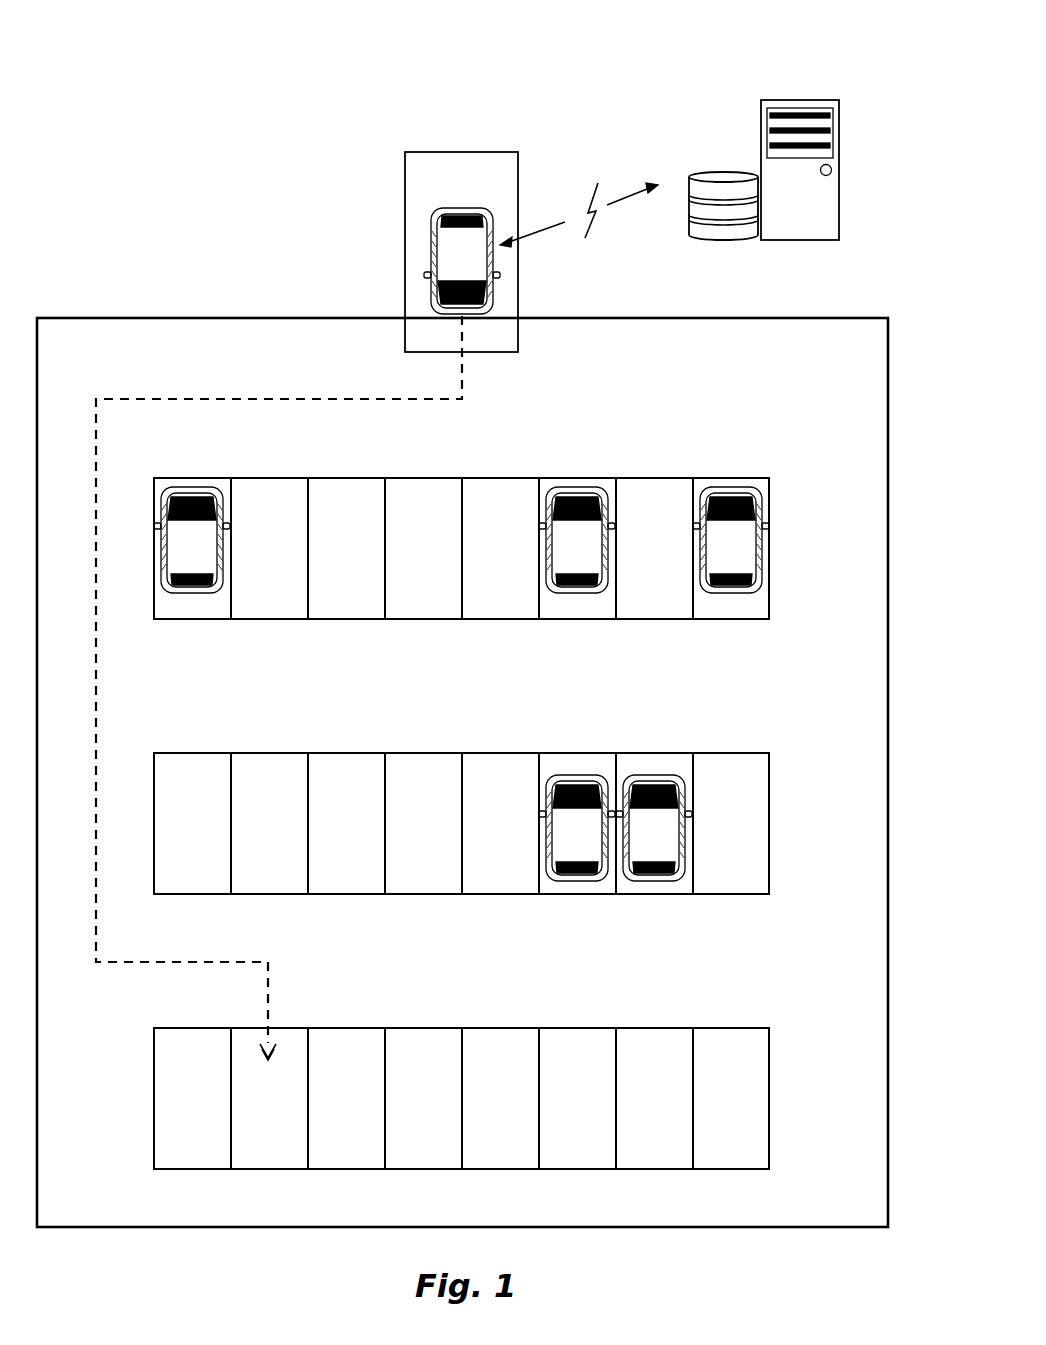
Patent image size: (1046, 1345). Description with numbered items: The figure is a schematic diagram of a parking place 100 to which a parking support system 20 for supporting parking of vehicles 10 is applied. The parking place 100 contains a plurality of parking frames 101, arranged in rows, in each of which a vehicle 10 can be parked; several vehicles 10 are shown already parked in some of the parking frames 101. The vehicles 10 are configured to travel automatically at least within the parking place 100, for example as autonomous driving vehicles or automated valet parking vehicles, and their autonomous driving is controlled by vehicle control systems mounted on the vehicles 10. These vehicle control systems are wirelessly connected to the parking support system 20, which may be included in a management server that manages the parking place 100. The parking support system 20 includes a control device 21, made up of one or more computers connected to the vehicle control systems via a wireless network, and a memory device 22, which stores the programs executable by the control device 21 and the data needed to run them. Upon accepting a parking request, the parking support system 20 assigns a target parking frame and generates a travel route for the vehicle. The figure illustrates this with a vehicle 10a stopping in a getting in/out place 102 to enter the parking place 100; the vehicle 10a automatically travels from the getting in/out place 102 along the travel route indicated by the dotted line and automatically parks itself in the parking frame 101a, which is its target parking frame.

The vehicle 10 is at (194, 594).
The vehicle 10a is at (430, 224).
The parking support system 20 is at (708, 62).
The control device 21 is at (792, 100).
The memory device 22 is at (720, 172).
The parking place 100 is at (92, 318).
The parking frame 101 is at (194, 478).
The parking frame 101a is at (273, 1170).
The getting in/out place 102 is at (496, 152).